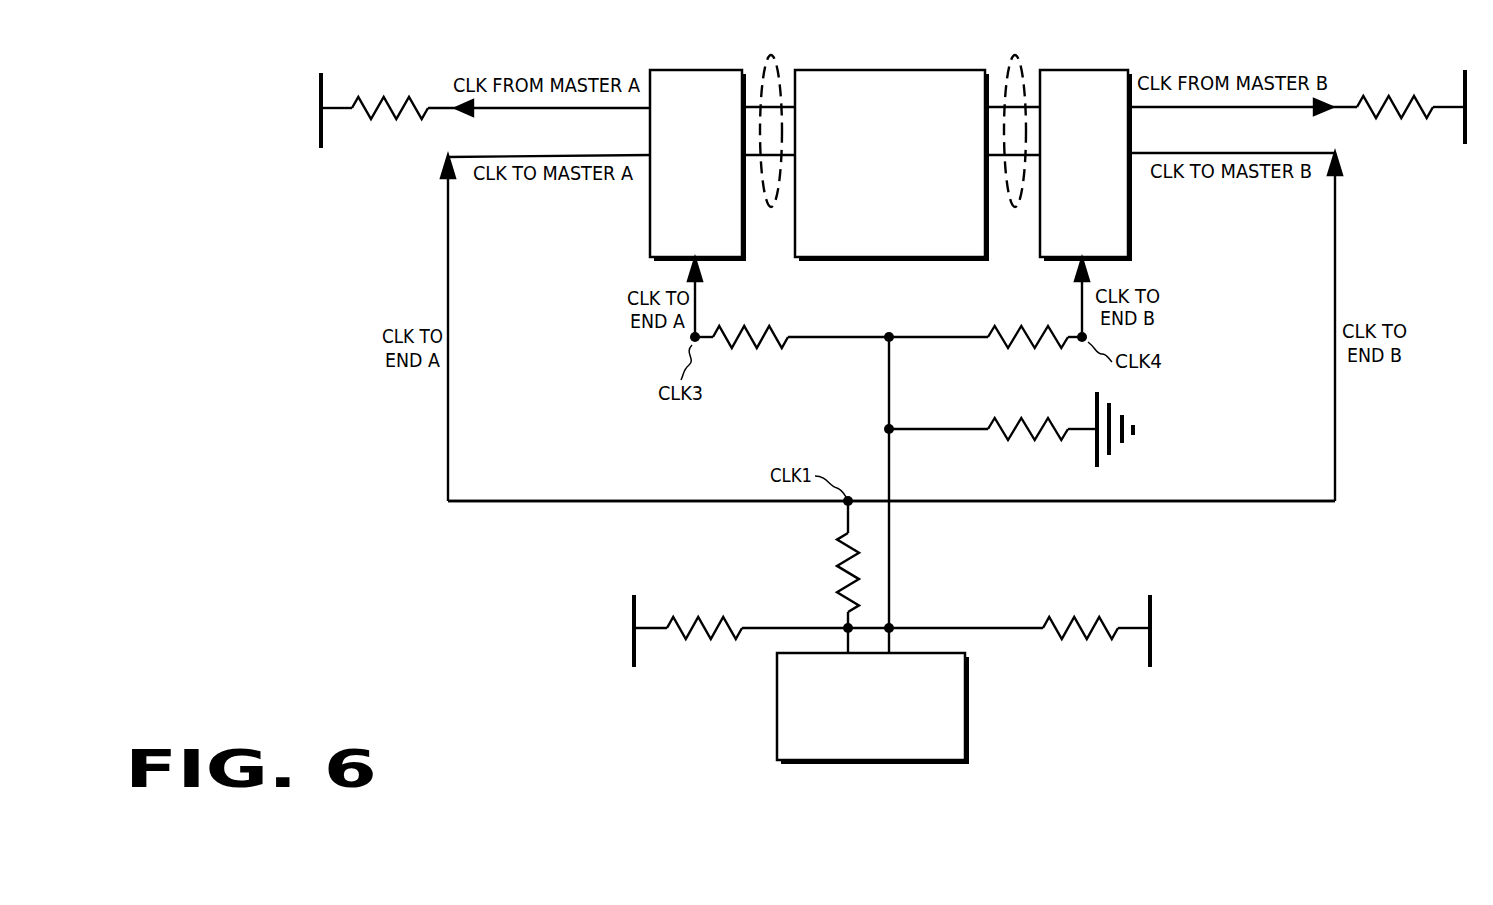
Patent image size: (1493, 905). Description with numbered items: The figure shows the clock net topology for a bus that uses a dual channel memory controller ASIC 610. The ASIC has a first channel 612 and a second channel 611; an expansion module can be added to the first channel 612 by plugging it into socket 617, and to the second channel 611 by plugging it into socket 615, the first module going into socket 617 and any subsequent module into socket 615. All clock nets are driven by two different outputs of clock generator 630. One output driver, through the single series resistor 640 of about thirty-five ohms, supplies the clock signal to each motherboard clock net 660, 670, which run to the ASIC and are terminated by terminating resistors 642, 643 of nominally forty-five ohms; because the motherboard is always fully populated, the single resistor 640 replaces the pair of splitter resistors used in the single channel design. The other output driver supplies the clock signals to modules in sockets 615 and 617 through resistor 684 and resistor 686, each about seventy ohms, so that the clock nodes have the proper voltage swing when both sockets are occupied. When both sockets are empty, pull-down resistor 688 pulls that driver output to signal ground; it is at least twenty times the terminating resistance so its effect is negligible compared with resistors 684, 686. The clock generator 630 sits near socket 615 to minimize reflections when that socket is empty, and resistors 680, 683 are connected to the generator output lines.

The dual channel memory controller ASIC 610 is at (972, 249).
The second channel 611 is at (1025, 65).
The first channel 612 is at (780, 65).
The socket 615 is at (1122, 249).
The socket 617 is at (735, 249).
The clock generator 630 is at (957, 747).
The resistor Rs1 640 is at (832, 589).
The terminating resistor 642 is at (407, 142).
The terminating resistor 643 is at (1403, 141).
The clock net 660 is at (601, 499).
The clock net 670 is at (1245, 498).
The resistor Rx 680 is at (710, 669).
The resistor Rx 683 is at (1093, 669).
The resistor Rs3 684 is at (1048, 371).
The resistor Rs4 686 is at (760, 371).
The resistor Rpd 688 is at (1048, 461).